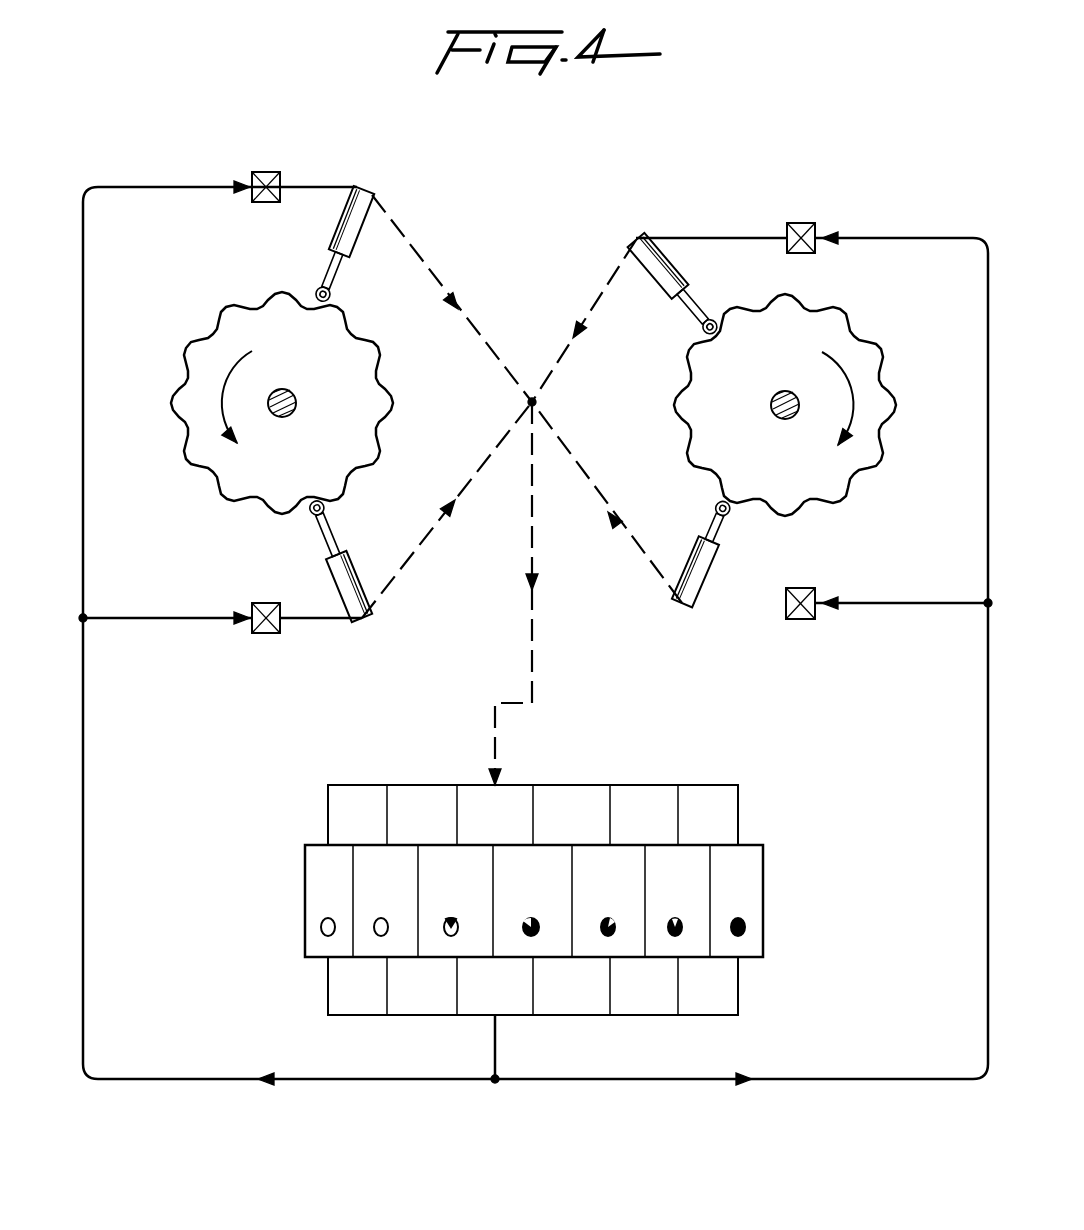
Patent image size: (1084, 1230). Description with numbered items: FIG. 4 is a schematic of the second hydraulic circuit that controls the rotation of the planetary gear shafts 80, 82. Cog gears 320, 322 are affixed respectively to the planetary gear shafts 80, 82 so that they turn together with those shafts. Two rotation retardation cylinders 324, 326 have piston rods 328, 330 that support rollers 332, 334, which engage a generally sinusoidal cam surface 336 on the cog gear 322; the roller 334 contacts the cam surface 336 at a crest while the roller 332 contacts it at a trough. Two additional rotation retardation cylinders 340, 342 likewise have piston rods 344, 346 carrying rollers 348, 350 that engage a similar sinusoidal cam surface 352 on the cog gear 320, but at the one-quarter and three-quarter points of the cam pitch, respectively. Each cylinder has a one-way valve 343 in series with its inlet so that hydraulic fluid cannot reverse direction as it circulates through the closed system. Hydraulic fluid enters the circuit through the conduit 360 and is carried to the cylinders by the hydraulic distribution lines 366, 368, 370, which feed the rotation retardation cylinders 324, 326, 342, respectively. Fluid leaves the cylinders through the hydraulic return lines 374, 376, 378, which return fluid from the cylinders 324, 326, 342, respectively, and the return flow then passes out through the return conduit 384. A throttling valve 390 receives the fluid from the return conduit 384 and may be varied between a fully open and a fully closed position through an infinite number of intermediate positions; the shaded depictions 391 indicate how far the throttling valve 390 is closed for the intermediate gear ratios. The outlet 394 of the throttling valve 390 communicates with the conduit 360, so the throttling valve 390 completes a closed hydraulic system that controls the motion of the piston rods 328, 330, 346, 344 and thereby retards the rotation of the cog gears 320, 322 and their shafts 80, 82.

The planetary gear shaft 80 is at (297, 401).
The planetary gear shaft 82 is at (775, 418).
The cog gear 320 is at (228, 478).
The cog gear 322 is at (878, 388).
The rotation retardation cylinder 324 is at (628, 252).
The rotation retardation cylinder 326 is at (686, 606).
The piston rod 328 is at (690, 305).
The piston rod 330 is at (718, 533).
The roller 332 is at (703, 332).
The roller 334 is at (714, 505).
The cam surface 336 is at (848, 512).
The rotation retardation cylinder 340 is at (372, 195).
The rotation retardation cylinder 342 is at (350, 618).
The one-way valve 343 is at (815, 225).
The piston rod 344 is at (338, 280).
The piston rod 346 is at (332, 533).
The roller 348 is at (318, 288).
The roller 350 is at (310, 518).
The cam surface 352 is at (205, 328).
The conduit 360 is at (795, 1080).
The hydraulic distribution line 366 is at (700, 238).
The hydraulic distribution line 368 is at (107, 186).
The hydraulic distribution line 370 is at (118, 620).
The hydraulic return line 374 is at (600, 302).
The hydraulic return line 376 is at (582, 466).
The hydraulic return line 378 is at (438, 264).
The return conduit 384 is at (527, 650).
The throttling valve 390 is at (752, 902).
The shaded depictions 391 is at (612, 934).
The outlet 394 is at (495, 1047).